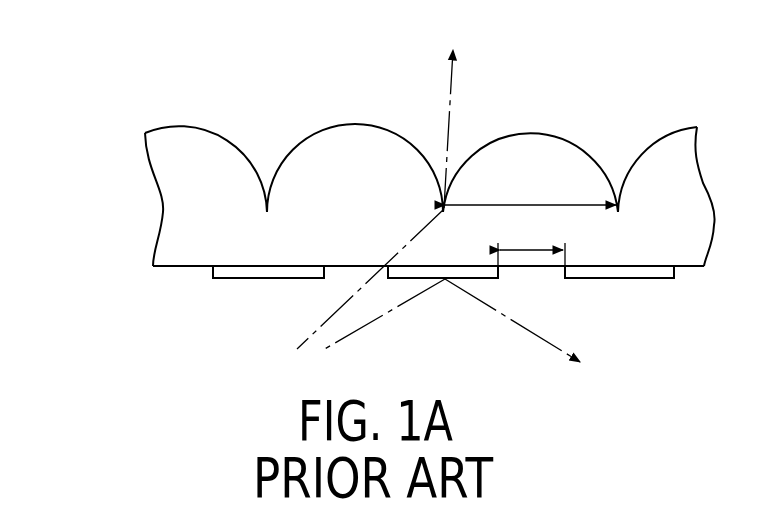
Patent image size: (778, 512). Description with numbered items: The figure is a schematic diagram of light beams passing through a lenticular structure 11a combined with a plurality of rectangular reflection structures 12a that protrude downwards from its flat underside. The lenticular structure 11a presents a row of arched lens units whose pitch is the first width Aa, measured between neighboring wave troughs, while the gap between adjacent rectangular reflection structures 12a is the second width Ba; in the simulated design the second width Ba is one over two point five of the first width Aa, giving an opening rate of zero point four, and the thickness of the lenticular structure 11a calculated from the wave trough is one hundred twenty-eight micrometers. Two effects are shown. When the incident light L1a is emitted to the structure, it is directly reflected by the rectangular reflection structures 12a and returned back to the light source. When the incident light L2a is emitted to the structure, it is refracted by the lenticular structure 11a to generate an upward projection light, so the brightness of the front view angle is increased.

The lenticular structure 11a is at (167, 160).
The rectangular reflection structures 12a is at (223, 271).
The first width Aa is at (530, 190).
The second width Ba is at (531, 243).
The incident light L1a is at (531, 320).
The incident light L2a is at (424, 129).